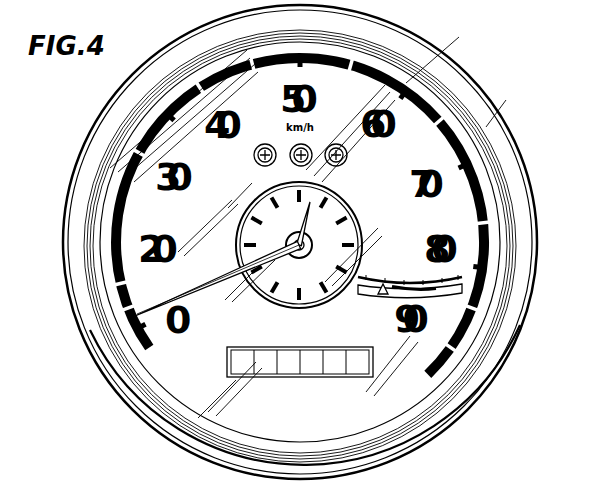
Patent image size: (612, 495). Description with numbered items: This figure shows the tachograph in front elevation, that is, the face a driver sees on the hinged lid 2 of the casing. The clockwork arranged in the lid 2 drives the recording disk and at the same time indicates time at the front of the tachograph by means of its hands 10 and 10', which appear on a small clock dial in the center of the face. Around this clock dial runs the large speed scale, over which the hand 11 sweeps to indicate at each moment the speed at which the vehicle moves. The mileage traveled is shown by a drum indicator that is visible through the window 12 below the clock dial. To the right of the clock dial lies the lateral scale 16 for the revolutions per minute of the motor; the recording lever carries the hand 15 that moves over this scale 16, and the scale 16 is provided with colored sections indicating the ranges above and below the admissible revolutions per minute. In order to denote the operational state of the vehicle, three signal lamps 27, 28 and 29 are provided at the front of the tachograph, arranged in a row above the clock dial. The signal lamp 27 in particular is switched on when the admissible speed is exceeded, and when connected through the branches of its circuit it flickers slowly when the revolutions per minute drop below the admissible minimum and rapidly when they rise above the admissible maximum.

The hinged lid 2 is at (82, 153).
The hand 10 is at (299, 253).
The hand 10' is at (342, 221).
The hand 11 is at (203, 284).
The window 12 is at (227, 365).
The hand 15 is at (380, 295).
The lateral scale 16 is at (464, 283).
The signal lamp 27 is at (293, 165).
The signal lamp 28 is at (254, 157).
The signal lamp 29 is at (337, 166).